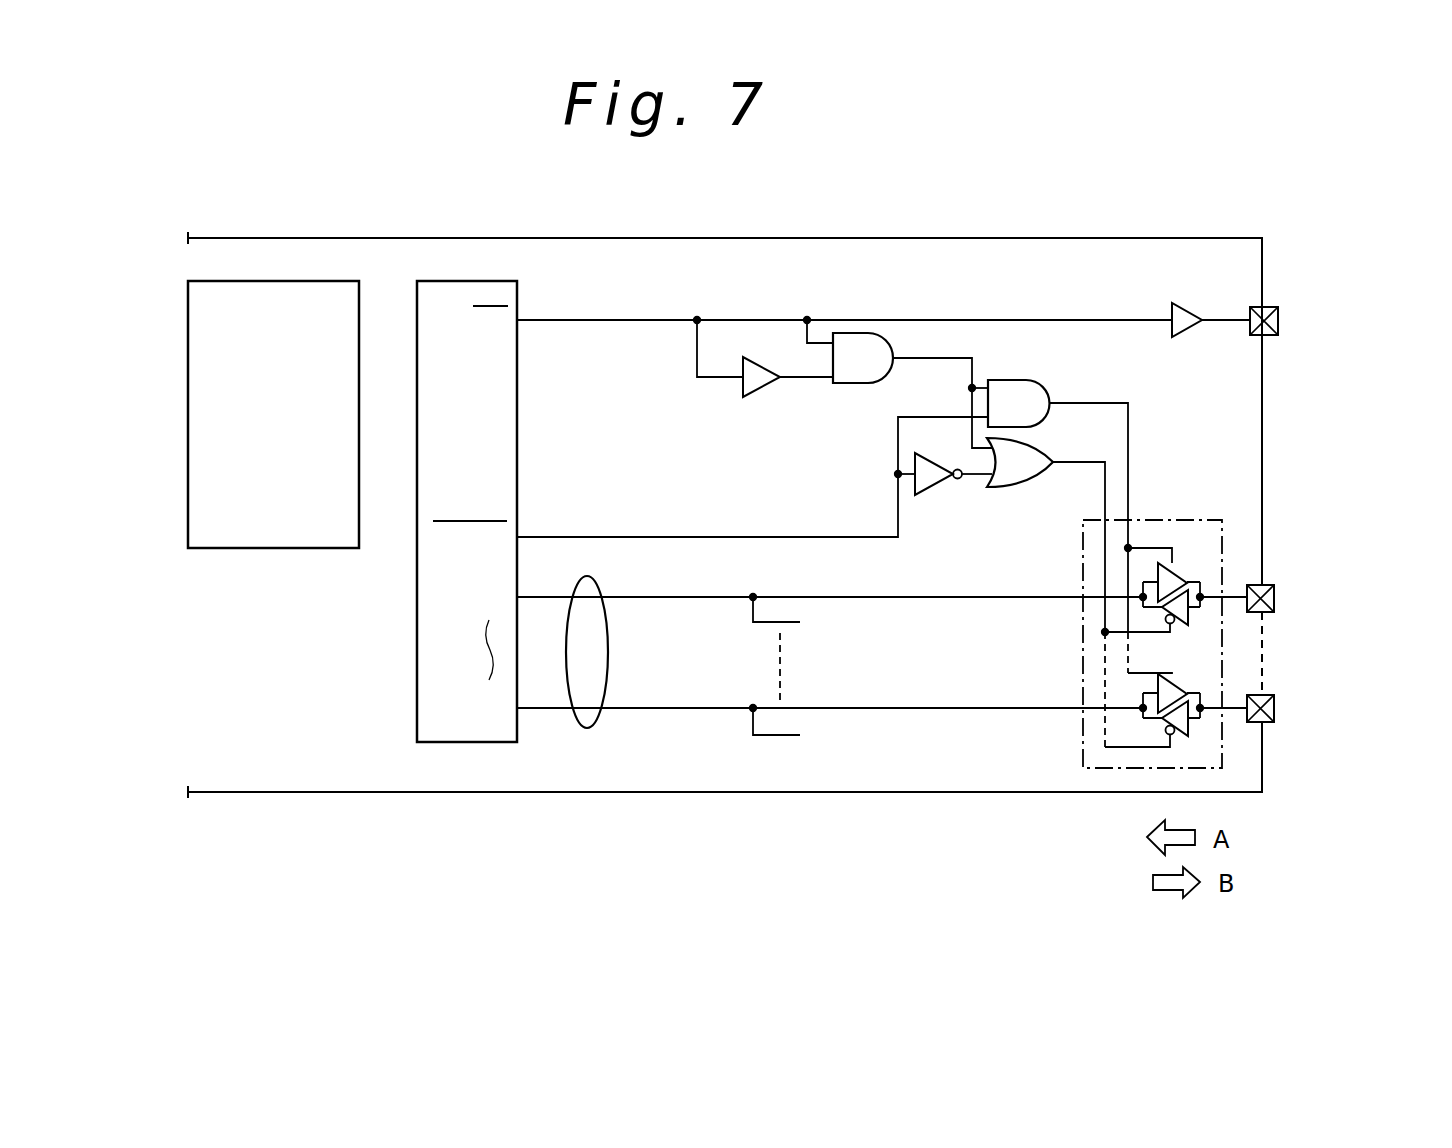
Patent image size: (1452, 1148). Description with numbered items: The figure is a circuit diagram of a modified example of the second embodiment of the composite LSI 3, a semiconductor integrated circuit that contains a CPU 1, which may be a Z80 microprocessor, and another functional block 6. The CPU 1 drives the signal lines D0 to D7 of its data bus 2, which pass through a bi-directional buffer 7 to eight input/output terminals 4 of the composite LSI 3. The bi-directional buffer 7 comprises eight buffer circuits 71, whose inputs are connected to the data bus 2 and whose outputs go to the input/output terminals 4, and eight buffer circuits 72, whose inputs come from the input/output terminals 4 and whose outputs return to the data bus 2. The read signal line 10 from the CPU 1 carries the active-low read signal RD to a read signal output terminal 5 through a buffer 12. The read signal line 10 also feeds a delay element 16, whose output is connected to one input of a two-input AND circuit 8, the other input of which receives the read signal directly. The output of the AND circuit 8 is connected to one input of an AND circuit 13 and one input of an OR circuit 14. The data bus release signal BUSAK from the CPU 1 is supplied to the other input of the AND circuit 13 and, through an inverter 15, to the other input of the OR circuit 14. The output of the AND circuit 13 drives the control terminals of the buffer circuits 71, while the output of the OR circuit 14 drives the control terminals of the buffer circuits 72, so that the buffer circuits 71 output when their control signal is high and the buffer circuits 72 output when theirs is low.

The CPU 1 is at (517, 292).
The data bus 2 is at (608, 668).
The composite LSI 3 is at (1147, 237).
The input/output terminals 4 is at (1282, 577).
The read signal output terminal 5 is at (1275, 313).
The another functional block 6 is at (362, 296).
The bi-directional buffer 7 is at (1187, 520).
The two-input AND circuit 8 is at (893, 352).
The read signal line 10 is at (972, 320).
The buffer 12 is at (1192, 318).
The AND circuit 13 is at (1043, 393).
The OR circuit 14 is at (1035, 488).
The inverter 15 is at (931, 494).
The delay element 16 is at (762, 372).
The buffer circuits 71 is at (1176, 585).
The buffer circuits 72 is at (1183, 621).